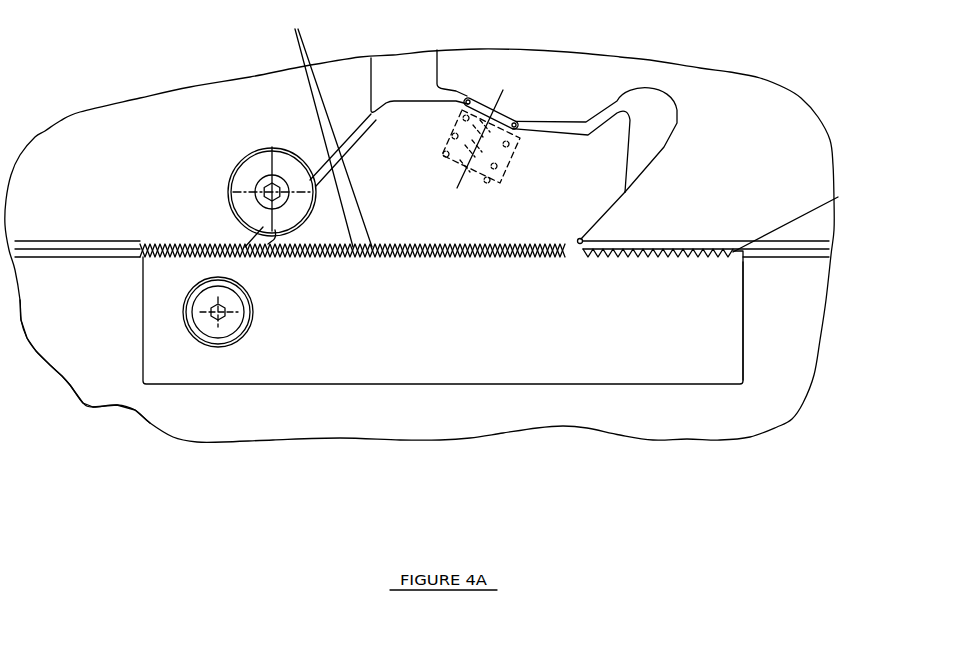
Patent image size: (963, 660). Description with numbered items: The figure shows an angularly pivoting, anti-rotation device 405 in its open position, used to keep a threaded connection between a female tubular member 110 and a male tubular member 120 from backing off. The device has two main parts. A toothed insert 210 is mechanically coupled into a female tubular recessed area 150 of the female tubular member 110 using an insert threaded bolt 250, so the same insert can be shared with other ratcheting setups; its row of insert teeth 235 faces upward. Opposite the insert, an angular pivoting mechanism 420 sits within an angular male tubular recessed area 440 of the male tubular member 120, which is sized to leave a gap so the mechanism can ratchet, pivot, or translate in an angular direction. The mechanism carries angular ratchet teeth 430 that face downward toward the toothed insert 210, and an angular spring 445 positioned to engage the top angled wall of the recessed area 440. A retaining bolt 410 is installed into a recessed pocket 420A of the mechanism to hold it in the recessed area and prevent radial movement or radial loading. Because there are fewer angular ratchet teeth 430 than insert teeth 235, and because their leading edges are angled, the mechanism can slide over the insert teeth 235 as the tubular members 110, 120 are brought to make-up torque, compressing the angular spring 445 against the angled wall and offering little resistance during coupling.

The female tubular member 110 is at (97, 370).
The male tubular member 120 is at (90, 157).
The female tubular recessed area 150 is at (748, 305).
The toothed insert 210 is at (570, 363).
The insert teeth 235 is at (717, 248).
The insert threaded bolt 250 is at (205, 318).
The angularly pivoting, anti-rotation device 405 is at (125, 490).
The retaining bolt 410 is at (257, 167).
The angular pivoting mechanism 420 is at (405, 127).
The recessed pocket 420A is at (290, 230).
The angular ratchet teeth 430 is at (293, 28).
The angular male tubular recessed area 440 is at (657, 117).
The angular spring 445 is at (497, 103).